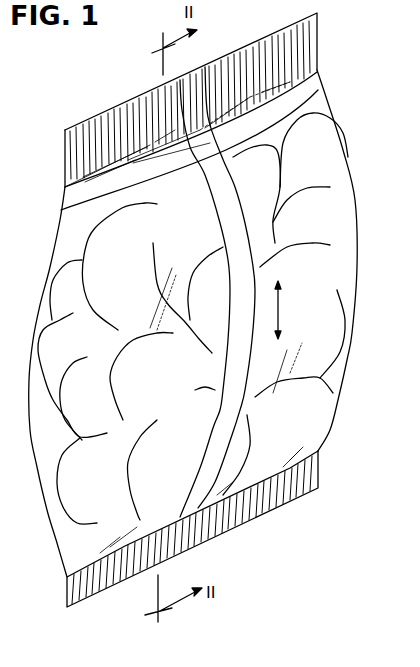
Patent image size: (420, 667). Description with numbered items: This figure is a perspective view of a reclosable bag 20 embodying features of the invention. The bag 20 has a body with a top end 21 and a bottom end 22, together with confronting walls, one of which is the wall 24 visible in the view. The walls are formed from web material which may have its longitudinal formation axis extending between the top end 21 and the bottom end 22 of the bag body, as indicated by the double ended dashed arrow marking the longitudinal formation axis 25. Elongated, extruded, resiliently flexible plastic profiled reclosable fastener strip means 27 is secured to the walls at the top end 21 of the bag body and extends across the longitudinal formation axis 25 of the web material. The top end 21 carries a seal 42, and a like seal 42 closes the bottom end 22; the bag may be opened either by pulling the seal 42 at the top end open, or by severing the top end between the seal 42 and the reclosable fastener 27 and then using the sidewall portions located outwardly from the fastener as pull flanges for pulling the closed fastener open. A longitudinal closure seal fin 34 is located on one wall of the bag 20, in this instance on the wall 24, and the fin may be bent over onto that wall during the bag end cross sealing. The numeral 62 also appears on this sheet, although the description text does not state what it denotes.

The flexible bag package 20 is at (216, 309).
The top end seal region 21 is at (215, 122).
The bottom end seal region 22 is at (319, 467).
The bag body wall 24 is at (343, 183).
The width dimension 25 is at (281, 303).
The seal boundary line 27 is at (183, 180).
The longitudinal strip 34 is at (228, 406).
The heat seal 42 is at (250, 56).
The element 62 is at (282, 645).